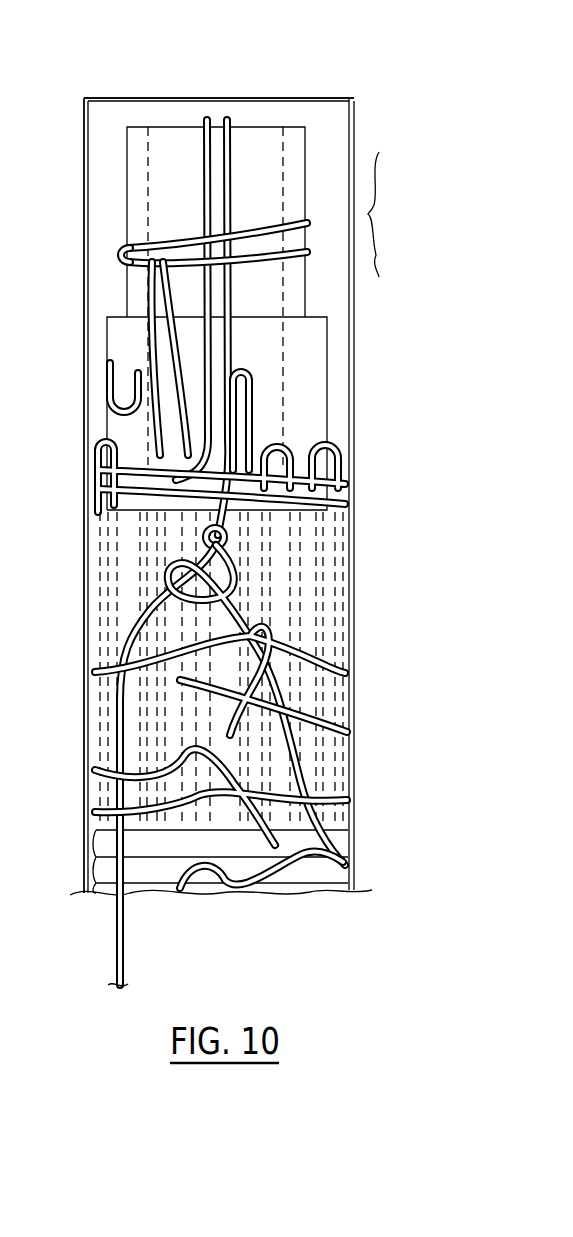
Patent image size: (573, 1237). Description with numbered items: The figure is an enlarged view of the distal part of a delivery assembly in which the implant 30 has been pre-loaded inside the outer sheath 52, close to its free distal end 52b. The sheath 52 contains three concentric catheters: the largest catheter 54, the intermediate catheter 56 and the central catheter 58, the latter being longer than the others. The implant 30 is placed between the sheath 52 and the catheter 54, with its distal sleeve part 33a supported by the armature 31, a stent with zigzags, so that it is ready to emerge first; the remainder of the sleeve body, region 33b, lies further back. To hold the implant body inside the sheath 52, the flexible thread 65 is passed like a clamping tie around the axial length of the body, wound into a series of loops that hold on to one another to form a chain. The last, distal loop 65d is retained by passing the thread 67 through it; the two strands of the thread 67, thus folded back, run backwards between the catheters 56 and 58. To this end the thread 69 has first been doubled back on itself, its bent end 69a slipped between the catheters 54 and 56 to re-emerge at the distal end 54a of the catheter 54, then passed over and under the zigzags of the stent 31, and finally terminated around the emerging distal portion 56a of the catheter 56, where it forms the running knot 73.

The implant 30 is at (112, 610).
The armature 31 is at (330, 452).
The distal sleeve part 33a is at (325, 637).
The lower fabric layer 33b is at (335, 830).
The outer sheath 52 is at (350, 300).
The free distal end 52b is at (130, 105).
The catheter 54 is at (312, 383).
The distal end 54a is at (107, 352).
The catheter 56 is at (137, 158).
The emerging distal portion 56a is at (402, 214).
The central catheter 58 is at (265, 143).
The flexible thread 65 is at (108, 770).
The distal loop 65d is at (300, 565).
The flexible thread 67 is at (232, 175).
The flexible thread 69 is at (160, 355).
The bent end 69a is at (123, 270).
The running knot 73 is at (178, 258).